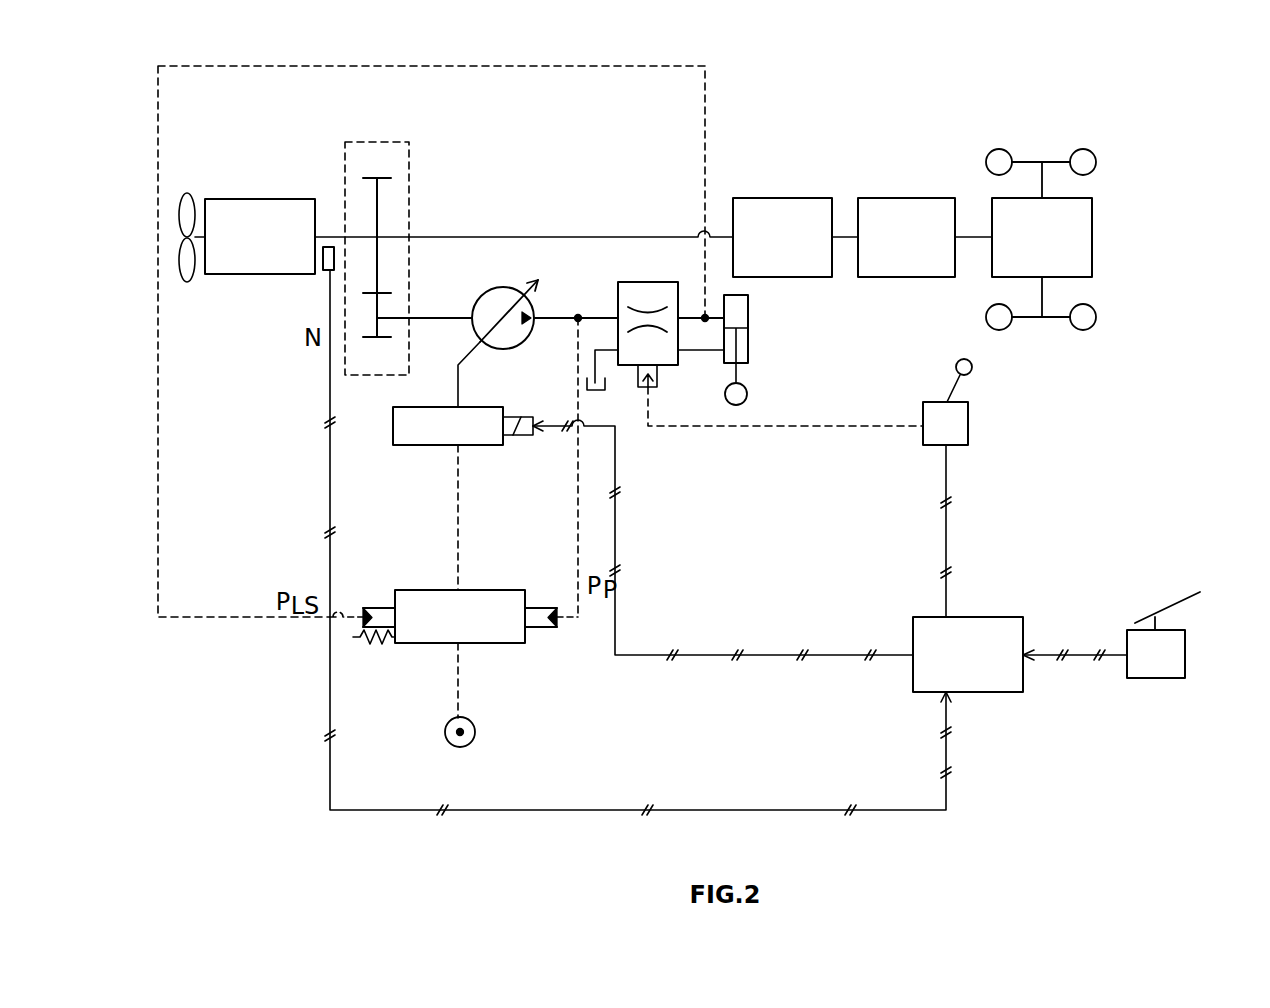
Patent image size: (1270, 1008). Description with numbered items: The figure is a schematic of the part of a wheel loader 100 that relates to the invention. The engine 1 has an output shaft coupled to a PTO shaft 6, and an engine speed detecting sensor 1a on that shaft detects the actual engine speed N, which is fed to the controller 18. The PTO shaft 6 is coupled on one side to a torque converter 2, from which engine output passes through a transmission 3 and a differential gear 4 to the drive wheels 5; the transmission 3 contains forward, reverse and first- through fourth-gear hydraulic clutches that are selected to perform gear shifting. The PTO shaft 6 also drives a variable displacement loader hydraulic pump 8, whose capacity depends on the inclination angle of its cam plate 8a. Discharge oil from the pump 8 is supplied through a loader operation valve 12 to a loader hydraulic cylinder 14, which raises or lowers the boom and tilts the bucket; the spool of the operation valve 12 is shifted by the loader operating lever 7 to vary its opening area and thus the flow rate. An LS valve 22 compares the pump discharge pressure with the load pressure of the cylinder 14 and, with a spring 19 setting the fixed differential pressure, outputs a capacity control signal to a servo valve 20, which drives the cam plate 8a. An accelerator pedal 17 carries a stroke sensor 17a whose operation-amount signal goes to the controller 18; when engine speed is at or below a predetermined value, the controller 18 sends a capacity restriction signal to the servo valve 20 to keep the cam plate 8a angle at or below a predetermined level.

The wheel loader 100 is at (902, 100).
The engine 1 is at (260, 275).
The engine speed detecting sensor 1a is at (323, 271).
The PTO shaft 6 is at (391, 142).
The loader hydraulic pump 8 is at (503, 287).
The cam plate 8a is at (538, 283).
The loader operation valve 12 is at (650, 282).
The loader hydraulic cylinder 14 is at (748, 350).
The torque converter 2 is at (803, 277).
The transmission 3 is at (925, 277).
The differential gear 4 is at (1092, 237).
The drive wheels 5 is at (1053, 160).
The loader operating lever 7 is at (966, 384).
The servo valve 20 is at (497, 407).
The LS valve 22 is at (508, 643).
The spring 19 is at (375, 645).
The controller 18 is at (1000, 692).
The accelerator pedal 17 is at (1185, 595).
The stroke sensor 17a is at (1185, 645).